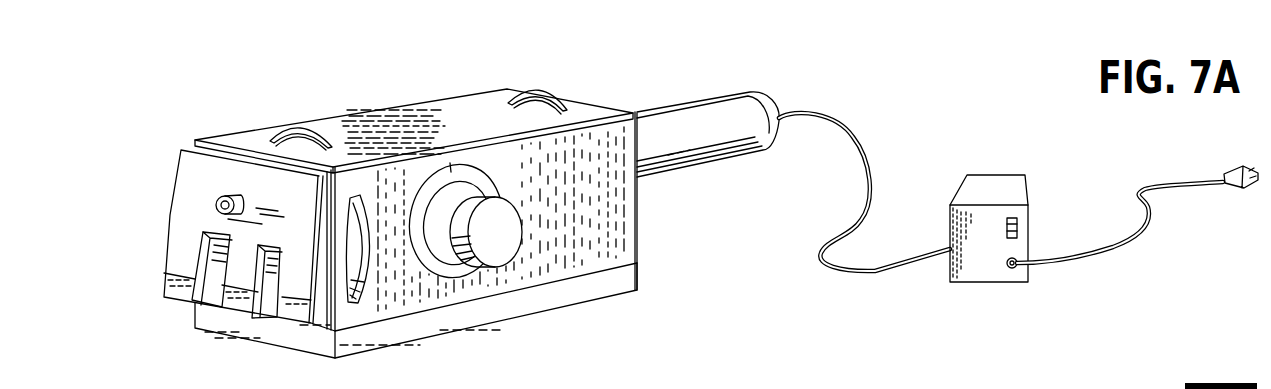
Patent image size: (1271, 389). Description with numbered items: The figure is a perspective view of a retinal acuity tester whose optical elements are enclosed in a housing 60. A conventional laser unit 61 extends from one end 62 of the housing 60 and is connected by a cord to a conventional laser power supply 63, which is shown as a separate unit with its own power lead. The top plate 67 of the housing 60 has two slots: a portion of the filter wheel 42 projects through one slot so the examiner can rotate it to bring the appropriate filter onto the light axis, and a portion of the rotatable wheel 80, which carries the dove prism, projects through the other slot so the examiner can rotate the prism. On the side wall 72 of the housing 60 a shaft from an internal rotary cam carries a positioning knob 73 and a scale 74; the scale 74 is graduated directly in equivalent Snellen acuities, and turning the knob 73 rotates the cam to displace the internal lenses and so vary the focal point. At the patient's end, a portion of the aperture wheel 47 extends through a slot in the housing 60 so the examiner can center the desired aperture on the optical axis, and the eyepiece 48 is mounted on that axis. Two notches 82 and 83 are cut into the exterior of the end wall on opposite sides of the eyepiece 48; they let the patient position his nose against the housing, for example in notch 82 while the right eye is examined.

The filter wheel 42 is at (541, 96).
The aperture wheel 47 is at (366, 264).
The eyepiece 48 is at (215, 203).
The housing 60 is at (613, 253).
The laser unit 61 is at (695, 110).
The end of the housing 62 is at (637, 207).
The laser power supply 63 is at (970, 267).
The top plate 67 is at (443, 118).
The side wall 72 is at (555, 262).
The positioning knob 73 is at (504, 226).
The scale 74 is at (463, 181).
The rotatable wheel 80 is at (301, 127).
The notch 82 is at (198, 287).
The notch 83 is at (268, 290).